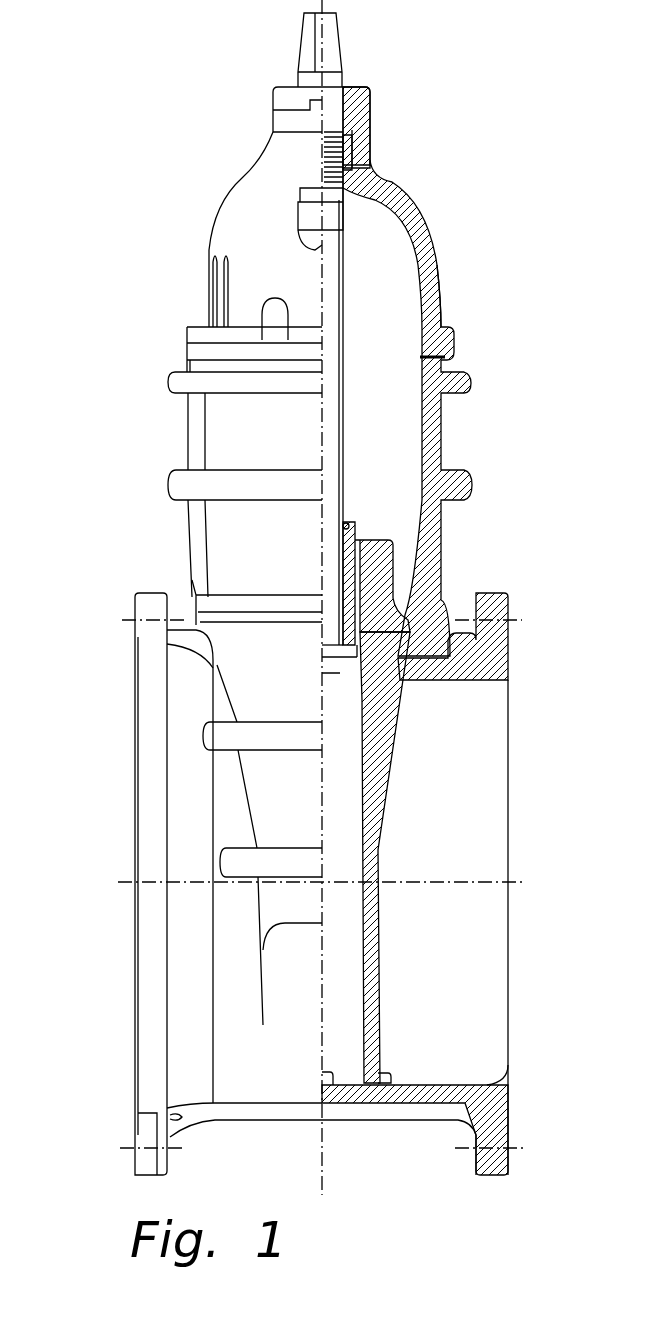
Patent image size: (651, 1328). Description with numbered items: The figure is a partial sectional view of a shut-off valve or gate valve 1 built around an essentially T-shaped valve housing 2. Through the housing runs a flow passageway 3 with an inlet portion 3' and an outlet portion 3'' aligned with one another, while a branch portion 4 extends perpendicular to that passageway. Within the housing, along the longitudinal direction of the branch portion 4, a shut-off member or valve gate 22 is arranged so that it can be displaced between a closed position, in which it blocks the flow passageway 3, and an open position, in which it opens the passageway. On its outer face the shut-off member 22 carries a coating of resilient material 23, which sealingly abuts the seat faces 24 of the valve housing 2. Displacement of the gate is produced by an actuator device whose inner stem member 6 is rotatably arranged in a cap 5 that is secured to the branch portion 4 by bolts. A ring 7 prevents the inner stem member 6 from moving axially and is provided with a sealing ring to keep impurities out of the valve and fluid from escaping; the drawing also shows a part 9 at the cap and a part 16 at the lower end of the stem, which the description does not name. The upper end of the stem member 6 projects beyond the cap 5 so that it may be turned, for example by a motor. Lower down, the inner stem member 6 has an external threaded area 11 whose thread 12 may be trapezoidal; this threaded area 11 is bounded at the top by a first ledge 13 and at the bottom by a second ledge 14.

The shut-off valve 1 is at (212, 214).
The valve housing 2 is at (455, 451).
The flow passageway 3 is at (378, 884).
The inlet portion 3' is at (537, 1107).
The outlet portion 3'' is at (105, 884).
The branch portion 4 is at (196, 550).
The cap 5 is at (428, 277).
The inner stem member 6 is at (365, 170).
The ring 7 is at (358, 150).
The stem bushing 9 is at (370, 98).
The external threaded area 11 is at (337, 458).
The thread 12 is at (340, 347).
The first ledge 13 is at (348, 225).
The second ledge 14 is at (332, 660).
The stem coupling nut 16 is at (362, 531).
The shut-off member 22 is at (395, 588).
The resilient material 23 is at (378, 982).
The seat faces 24 is at (385, 1080).